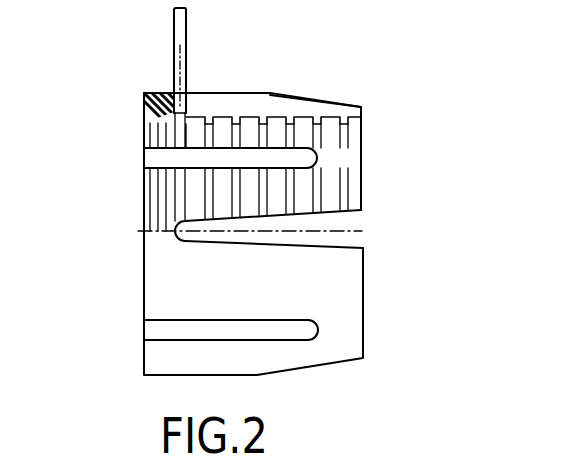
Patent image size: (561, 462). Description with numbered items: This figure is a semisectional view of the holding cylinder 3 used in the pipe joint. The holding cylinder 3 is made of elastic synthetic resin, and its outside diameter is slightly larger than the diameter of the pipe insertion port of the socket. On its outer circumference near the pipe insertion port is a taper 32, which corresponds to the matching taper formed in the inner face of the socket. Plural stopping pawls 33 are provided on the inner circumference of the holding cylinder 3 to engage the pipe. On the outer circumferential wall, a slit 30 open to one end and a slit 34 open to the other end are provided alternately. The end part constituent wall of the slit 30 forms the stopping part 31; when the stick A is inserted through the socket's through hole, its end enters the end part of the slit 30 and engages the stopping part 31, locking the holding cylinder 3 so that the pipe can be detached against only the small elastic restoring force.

The holding cylinder 3 is at (137, 190).
The slit 30 is at (271, 96).
The stopping part 31 is at (187, 110).
The taper 32 is at (322, 100).
The stopping pawls 33 is at (268, 120).
The slit 34 is at (147, 155).
The stick A is at (173, 34).